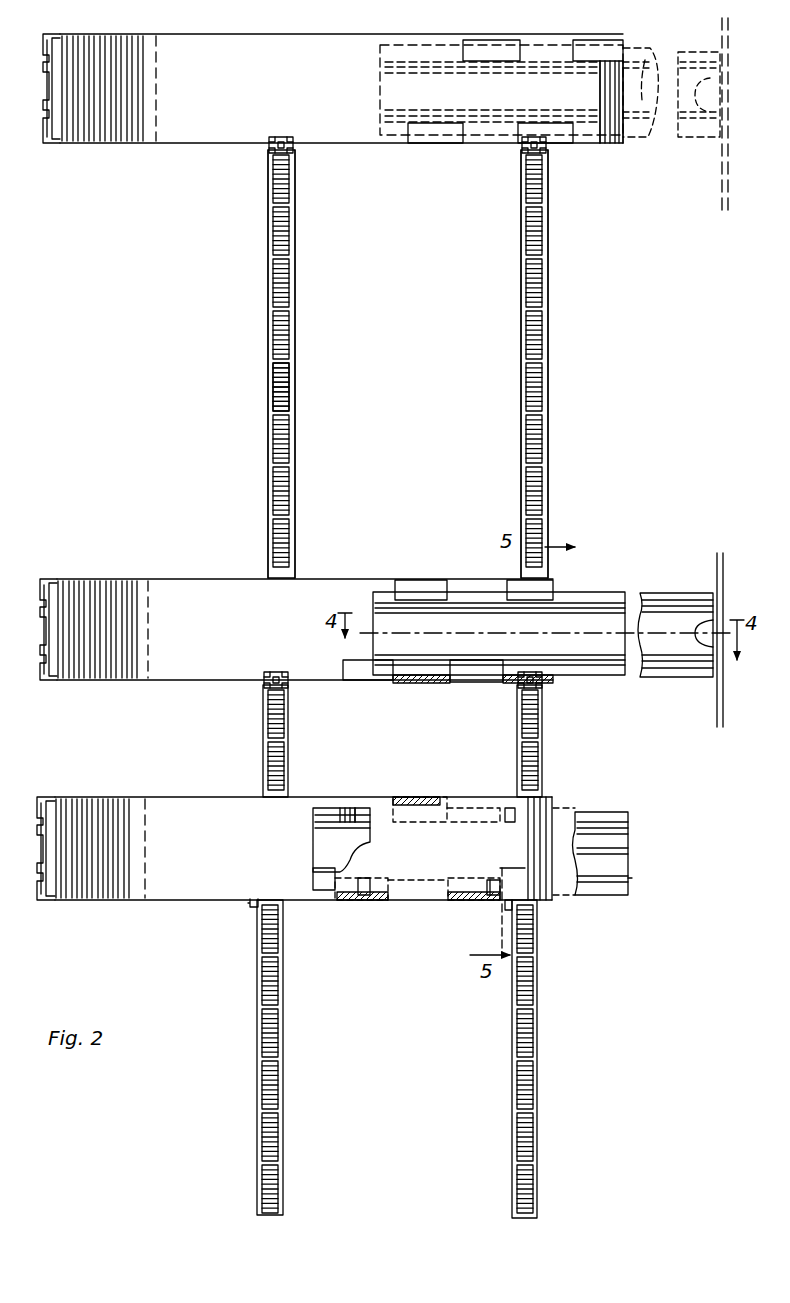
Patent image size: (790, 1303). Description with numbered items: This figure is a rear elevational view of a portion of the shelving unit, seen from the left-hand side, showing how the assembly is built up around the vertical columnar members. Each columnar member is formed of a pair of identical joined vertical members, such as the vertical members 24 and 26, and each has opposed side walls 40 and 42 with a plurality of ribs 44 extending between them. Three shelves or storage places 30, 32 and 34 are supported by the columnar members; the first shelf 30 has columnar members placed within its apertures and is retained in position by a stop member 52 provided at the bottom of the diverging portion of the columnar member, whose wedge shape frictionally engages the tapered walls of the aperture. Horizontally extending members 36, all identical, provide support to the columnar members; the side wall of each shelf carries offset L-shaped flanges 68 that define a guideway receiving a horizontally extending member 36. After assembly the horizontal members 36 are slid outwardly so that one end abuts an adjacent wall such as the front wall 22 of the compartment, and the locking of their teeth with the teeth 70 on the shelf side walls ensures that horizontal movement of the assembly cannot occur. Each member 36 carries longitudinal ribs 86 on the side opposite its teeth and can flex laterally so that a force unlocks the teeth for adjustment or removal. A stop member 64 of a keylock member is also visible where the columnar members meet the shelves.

The front wall 22 is at (720, 150).
The vertical columnar member 24 is at (540, 1065).
The vertical columnar member 26 is at (286, 1055).
The shelf 30 is at (213, 796).
The shelf 32 is at (213, 583).
The shelf 34 is at (318, 55).
The horizontally extending member 36 is at (95, 94).
The side wall 40 is at (296, 332).
The side wall 42 is at (268, 322).
The ribs 44 is at (291, 378).
The stop member 52 is at (254, 906).
The stop member 64 is at (290, 150).
The L-shaped flanges 68 is at (92, 58).
The teeth 70 is at (612, 145).
The ribs 86 is at (628, 878).